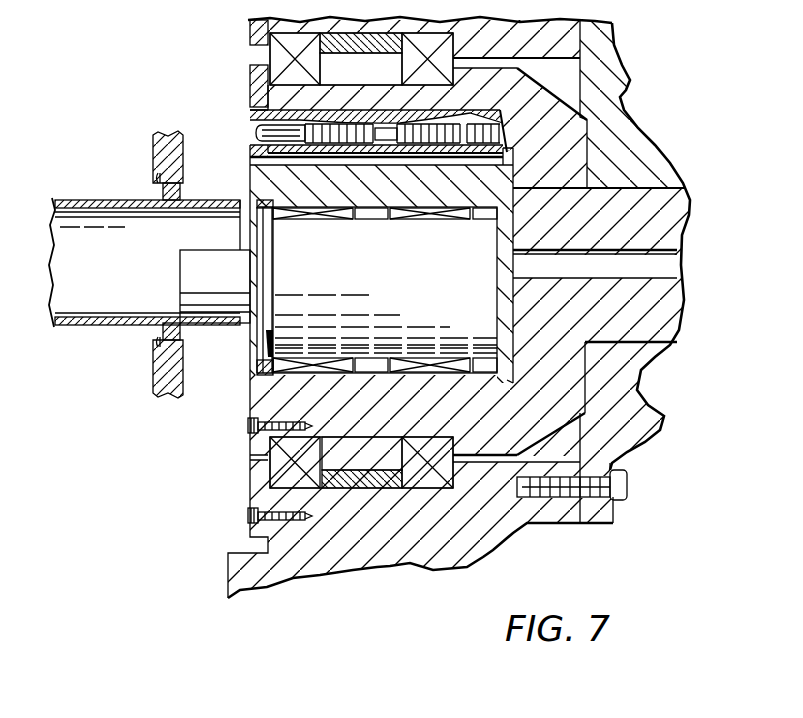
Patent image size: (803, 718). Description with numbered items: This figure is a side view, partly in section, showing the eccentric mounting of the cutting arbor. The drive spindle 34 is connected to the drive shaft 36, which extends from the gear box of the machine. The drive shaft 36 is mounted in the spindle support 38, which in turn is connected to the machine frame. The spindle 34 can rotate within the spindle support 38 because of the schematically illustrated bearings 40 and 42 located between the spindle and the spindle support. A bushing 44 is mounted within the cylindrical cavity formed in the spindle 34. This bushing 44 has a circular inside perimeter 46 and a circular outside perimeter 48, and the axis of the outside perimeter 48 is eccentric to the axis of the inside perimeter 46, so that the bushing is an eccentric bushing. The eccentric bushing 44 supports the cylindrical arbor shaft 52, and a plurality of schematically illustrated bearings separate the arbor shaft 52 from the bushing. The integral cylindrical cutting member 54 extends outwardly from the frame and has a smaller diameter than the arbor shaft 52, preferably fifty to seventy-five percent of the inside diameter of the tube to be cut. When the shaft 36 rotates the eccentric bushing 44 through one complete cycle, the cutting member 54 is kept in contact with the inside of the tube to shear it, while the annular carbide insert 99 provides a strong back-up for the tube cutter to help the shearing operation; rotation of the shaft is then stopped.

The drive spindle 34 is at (570, 382).
The drive shaft 36 is at (663, 227).
The spindle support 38 is at (472, 535).
The bearing 40 is at (280, 53).
The bearing 42 is at (408, 68).
The eccentric bushing 44 is at (285, 182).
The circular inside perimeter 46 is at (370, 218).
The circular outside perimeter 48 is at (440, 158).
The arbor shaft 52 is at (468, 313).
The cylindrical cutting member 54 is at (190, 280).
The annular carbide insert 99 is at (157, 197).